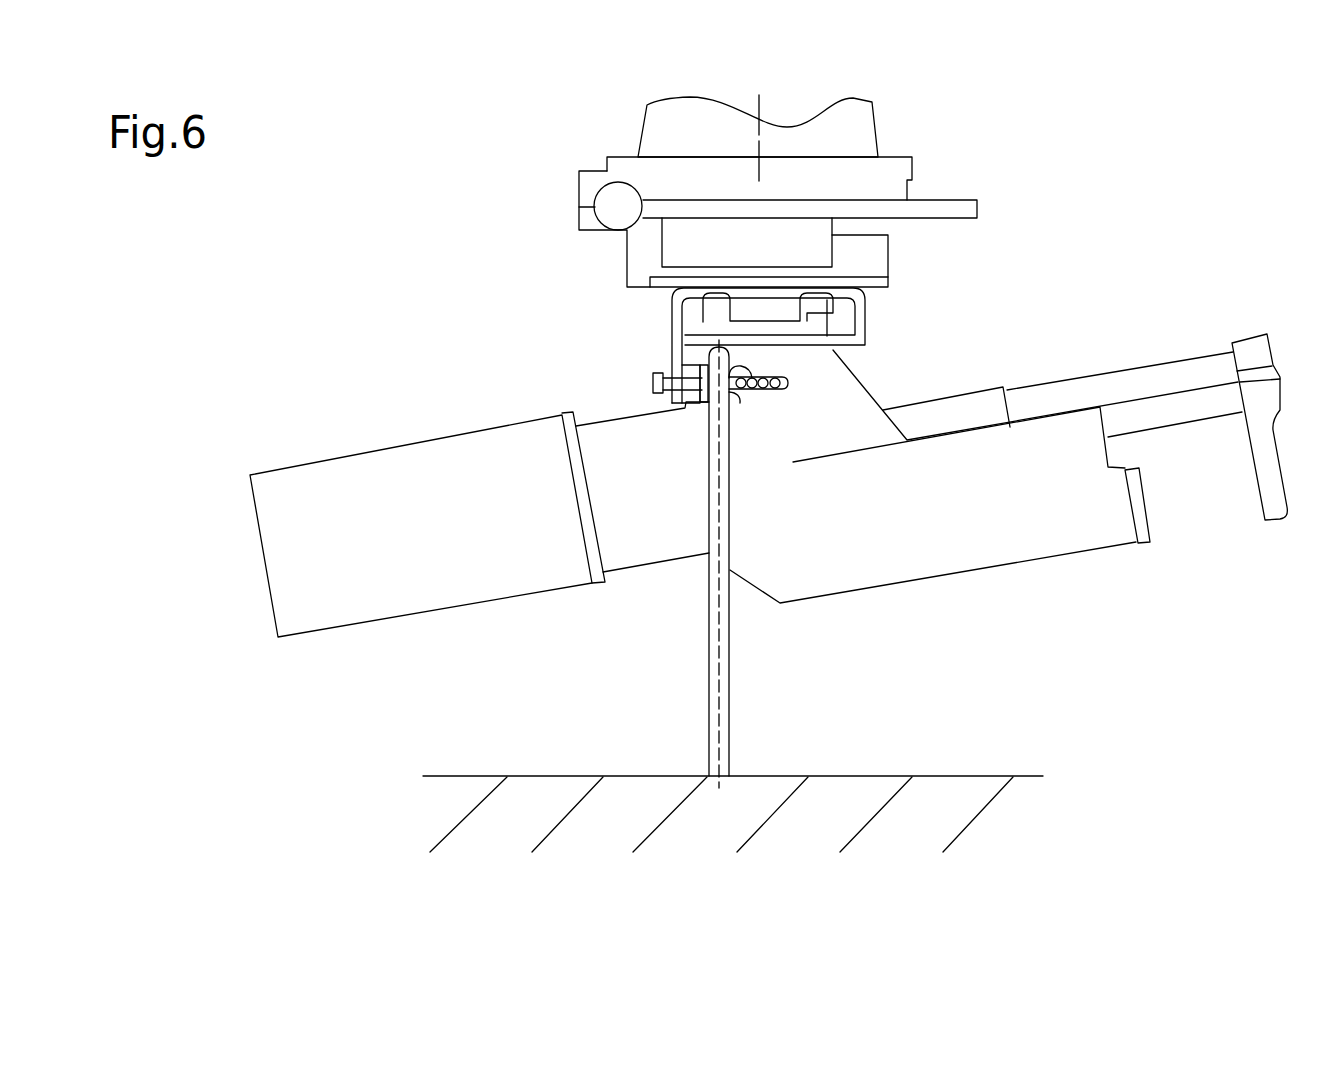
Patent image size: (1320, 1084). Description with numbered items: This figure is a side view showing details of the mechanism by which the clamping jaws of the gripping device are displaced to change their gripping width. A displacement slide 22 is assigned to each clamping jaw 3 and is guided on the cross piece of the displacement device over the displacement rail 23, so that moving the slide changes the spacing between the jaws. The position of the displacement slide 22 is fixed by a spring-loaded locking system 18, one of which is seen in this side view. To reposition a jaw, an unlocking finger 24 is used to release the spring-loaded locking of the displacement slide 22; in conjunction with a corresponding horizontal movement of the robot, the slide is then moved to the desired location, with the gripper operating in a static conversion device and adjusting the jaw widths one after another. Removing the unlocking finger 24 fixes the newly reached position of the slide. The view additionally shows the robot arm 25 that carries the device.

The clamping jaw 3 is at (1272, 522).
The locking system 18 is at (735, 378).
The displacement slide 22 is at (674, 318).
The displacement rail 23 is at (712, 295).
The unlocking finger 24 is at (733, 698).
The robot arm 25 is at (880, 125).